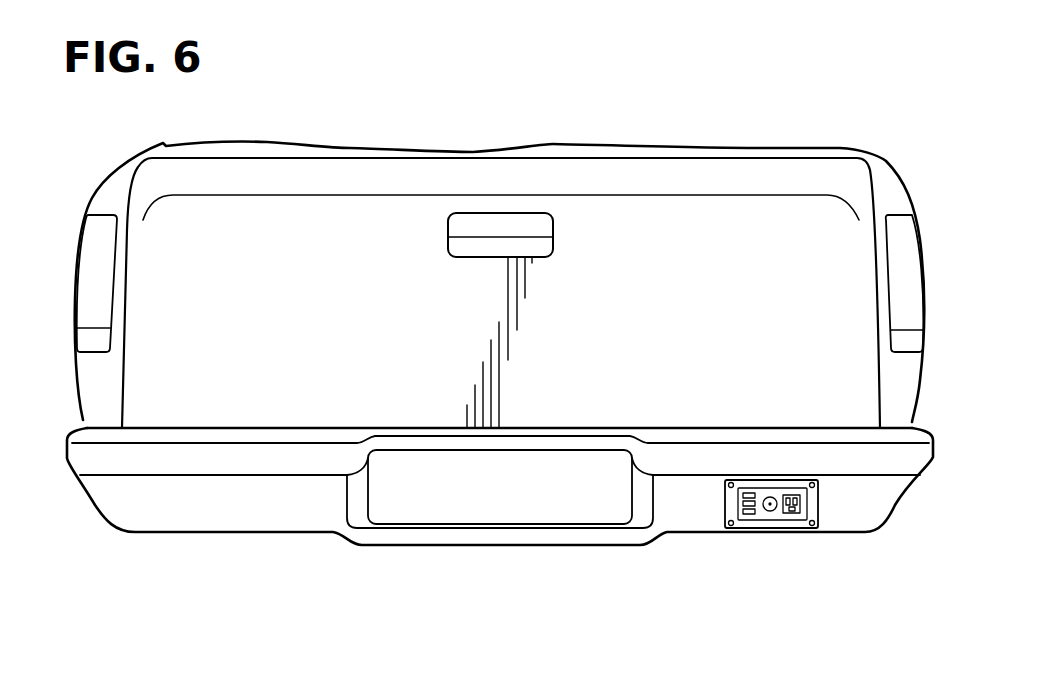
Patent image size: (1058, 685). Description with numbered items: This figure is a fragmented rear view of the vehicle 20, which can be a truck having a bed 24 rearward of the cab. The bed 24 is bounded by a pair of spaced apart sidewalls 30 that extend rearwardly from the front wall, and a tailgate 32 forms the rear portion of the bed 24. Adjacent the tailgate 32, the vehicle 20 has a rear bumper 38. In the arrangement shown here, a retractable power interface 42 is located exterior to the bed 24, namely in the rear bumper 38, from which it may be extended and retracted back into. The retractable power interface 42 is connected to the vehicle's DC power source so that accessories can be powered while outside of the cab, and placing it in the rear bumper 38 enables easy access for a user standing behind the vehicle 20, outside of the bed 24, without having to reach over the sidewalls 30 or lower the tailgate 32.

The vehicle 20 is at (555, 86).
The bed 24 is at (402, 109).
The sidewalls 30 is at (110, 187).
The tailgate 32 is at (684, 215).
The rear bumper 38 is at (882, 508).
The retractable power interface 42 is at (792, 528).